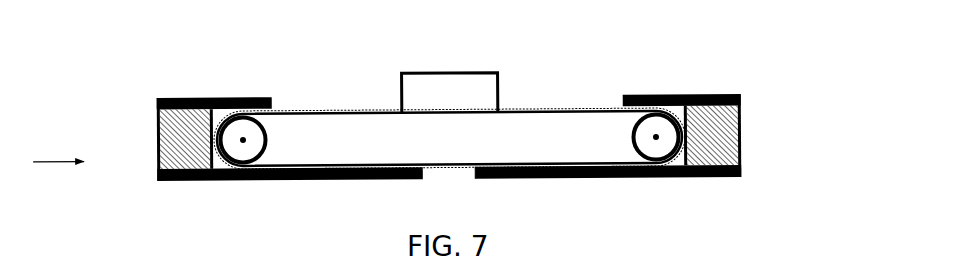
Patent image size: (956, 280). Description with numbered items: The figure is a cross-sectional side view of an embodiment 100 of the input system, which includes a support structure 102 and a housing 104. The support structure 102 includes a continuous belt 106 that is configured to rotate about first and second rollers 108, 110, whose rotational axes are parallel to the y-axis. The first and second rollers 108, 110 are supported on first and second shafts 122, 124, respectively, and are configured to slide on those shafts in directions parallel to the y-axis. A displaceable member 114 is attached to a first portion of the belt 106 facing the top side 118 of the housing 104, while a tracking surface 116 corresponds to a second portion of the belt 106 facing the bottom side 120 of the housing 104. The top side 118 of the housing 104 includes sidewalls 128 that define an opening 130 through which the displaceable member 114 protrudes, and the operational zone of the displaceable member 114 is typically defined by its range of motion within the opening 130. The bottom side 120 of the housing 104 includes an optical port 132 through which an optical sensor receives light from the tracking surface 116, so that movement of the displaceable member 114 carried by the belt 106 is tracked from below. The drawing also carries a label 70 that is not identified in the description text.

The input system embodiment 100 is at (766, 46).
The support structure 102 is at (597, 88).
The housing 104 is at (790, 121).
The continuous belt 106 is at (344, 110).
The first roller 108 is at (232, 165).
The second roller 110 is at (654, 156).
The displaceable member 114 is at (452, 73).
The tracking surface 116 is at (433, 169).
The top side 118 is at (699, 95).
The bottom side 120 is at (718, 180).
The first shaft 122 is at (243, 138).
The second shaft 124 is at (656, 138).
The sidewalls 128 is at (273, 105).
The opening 130 is at (536, 88).
The optical port 132 is at (468, 181).
The substrate 70 is at (802, 218).